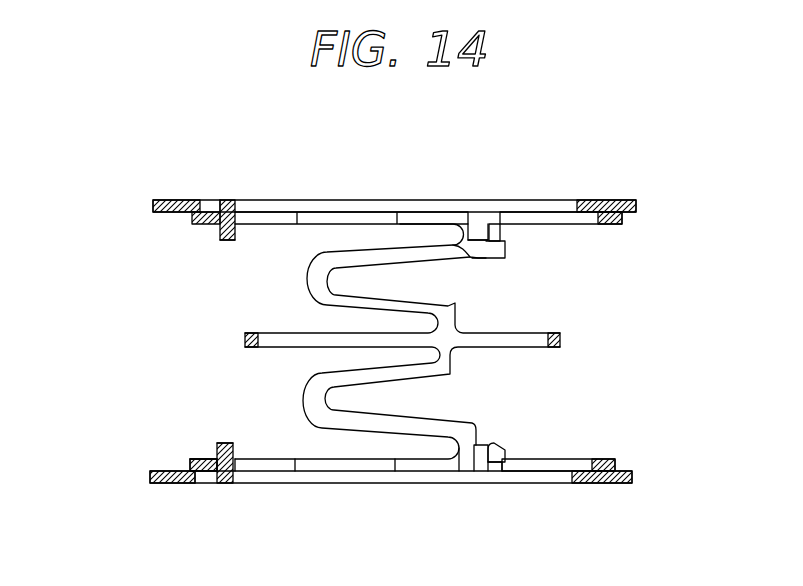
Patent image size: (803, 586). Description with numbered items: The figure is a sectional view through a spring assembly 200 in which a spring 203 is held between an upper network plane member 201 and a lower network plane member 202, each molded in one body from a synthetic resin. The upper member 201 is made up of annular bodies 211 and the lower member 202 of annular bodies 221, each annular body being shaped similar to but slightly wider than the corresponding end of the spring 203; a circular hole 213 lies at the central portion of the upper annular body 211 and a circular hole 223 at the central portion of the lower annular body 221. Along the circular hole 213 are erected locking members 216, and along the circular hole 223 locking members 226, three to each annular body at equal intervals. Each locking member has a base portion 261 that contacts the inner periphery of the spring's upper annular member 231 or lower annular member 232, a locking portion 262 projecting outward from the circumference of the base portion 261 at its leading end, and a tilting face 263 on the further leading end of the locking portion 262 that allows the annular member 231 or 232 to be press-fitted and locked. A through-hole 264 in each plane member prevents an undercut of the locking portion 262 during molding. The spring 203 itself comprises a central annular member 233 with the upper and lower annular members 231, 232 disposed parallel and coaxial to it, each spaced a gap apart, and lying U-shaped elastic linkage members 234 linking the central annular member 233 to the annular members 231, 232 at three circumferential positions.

The spring assembly 200 is at (565, 197).
The upper network plane member 201 is at (153, 202).
The lower network plane member 202 is at (150, 477).
The spring 203 is at (244, 340).
The annular body 211 is at (636, 202).
The circular hole 213 is at (525, 200).
The locking member 216 is at (222, 241).
The annular body 221 is at (632, 483).
The circular hole 223 is at (538, 484).
The locking member 226 is at (225, 443).
The upper annular member 231 is at (192, 220).
The lower annular member 232 is at (190, 462).
The central annular member 233 is at (560, 340).
The elastic linkage member 234 is at (306, 273).
The base portion 261 is at (478, 222).
The locking portion 262 is at (503, 232).
The tilting face 263 is at (500, 247).
The through-hole 264 is at (209, 200).